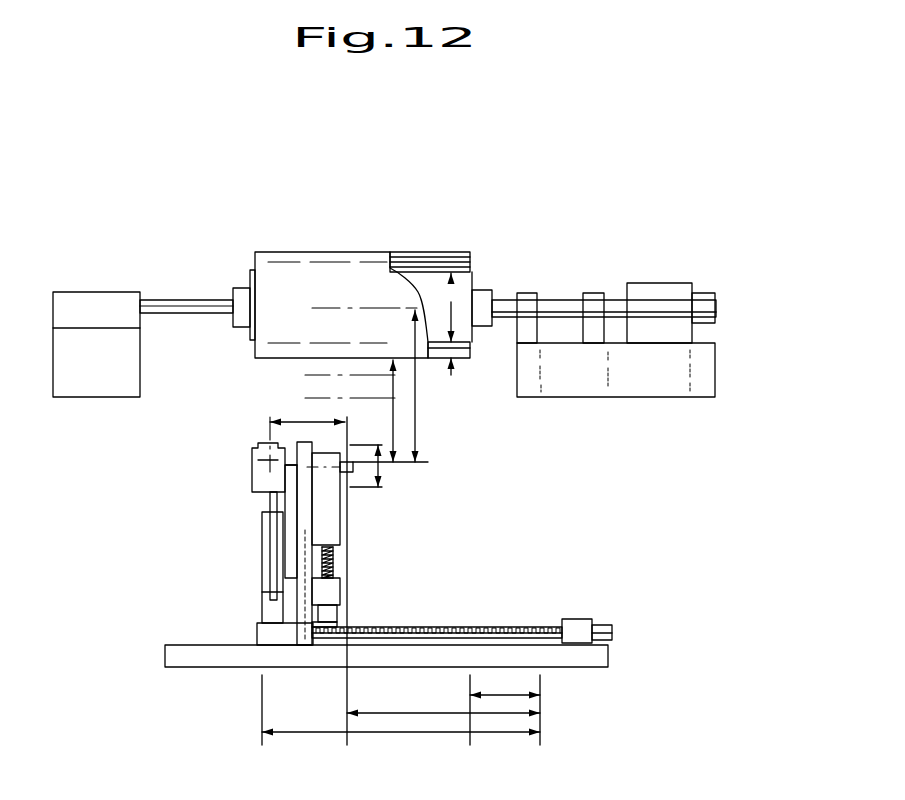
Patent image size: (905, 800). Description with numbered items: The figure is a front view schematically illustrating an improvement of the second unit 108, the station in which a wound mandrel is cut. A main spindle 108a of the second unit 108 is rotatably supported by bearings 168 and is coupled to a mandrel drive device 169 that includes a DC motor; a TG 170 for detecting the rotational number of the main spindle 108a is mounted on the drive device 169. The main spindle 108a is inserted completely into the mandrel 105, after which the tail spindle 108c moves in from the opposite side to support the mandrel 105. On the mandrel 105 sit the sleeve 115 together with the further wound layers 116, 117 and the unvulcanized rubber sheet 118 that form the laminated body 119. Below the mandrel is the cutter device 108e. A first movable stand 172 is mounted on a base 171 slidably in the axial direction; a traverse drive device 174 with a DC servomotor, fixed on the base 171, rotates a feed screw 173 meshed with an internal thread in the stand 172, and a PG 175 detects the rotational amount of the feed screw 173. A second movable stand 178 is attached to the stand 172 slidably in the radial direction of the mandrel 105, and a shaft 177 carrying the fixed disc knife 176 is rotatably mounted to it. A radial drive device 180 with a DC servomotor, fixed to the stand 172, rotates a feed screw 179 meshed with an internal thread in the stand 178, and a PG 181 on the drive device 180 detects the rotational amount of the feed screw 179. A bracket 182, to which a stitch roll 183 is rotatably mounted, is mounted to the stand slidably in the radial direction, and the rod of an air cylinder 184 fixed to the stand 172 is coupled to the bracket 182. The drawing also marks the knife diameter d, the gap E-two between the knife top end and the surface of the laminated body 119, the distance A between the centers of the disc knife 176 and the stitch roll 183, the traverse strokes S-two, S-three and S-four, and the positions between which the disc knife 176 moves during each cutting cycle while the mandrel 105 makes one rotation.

The second unit 108 is at (560, 190).
The mandrel 105 is at (470, 276).
The sleeve 115 is at (462, 258).
The ring 116 is at (428, 262).
The ring 117 is at (405, 258).
The unvulcanized rubber sheet 118 is at (388, 250).
The laminated body 119 is at (468, 350).
The main spindle 108a is at (505, 299).
The tail spindle 108c is at (200, 300).
The cutter device 108e is at (500, 553).
The bearings 168 is at (537, 292).
The mandrel drive device 169 is at (665, 283).
The TG 170 is at (705, 293).
The base 171 is at (177, 645).
The first movable stand 172 is at (257, 636).
The feed screw 173 is at (523, 627).
The traverse drive device 174 is at (578, 619).
The PG 175 is at (605, 625).
The disc knife 176 is at (342, 484).
The shaft 177 is at (353, 468).
The second movable stand 178 is at (340, 566).
The feed screw 179 is at (336, 568).
The radial drive device 180 is at (334, 596).
The PG 181 is at (337, 617).
The bracket 182 is at (262, 458).
The stitch roll 183 is at (254, 490).
The air cylinder 184 is at (262, 582).